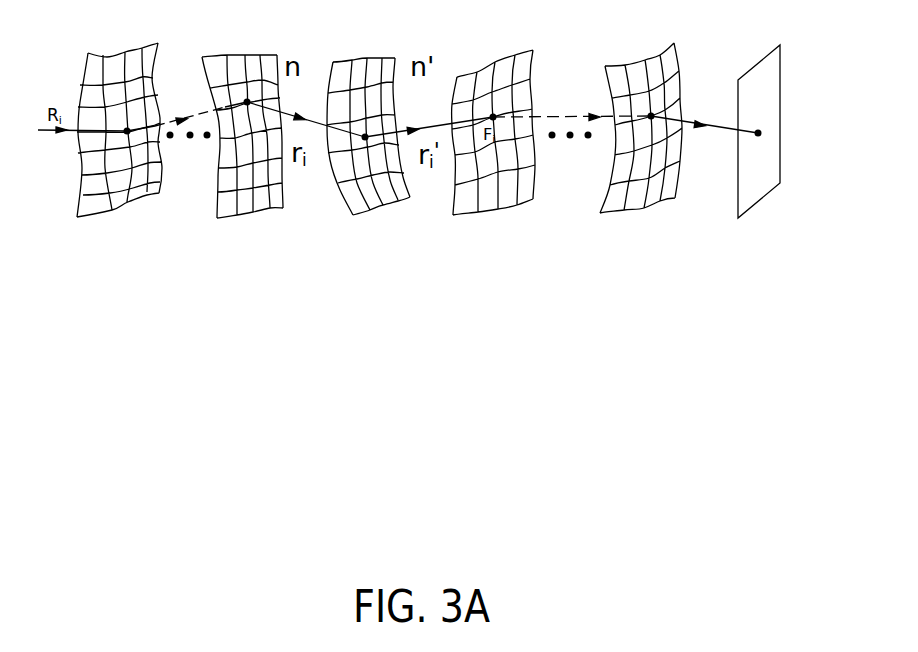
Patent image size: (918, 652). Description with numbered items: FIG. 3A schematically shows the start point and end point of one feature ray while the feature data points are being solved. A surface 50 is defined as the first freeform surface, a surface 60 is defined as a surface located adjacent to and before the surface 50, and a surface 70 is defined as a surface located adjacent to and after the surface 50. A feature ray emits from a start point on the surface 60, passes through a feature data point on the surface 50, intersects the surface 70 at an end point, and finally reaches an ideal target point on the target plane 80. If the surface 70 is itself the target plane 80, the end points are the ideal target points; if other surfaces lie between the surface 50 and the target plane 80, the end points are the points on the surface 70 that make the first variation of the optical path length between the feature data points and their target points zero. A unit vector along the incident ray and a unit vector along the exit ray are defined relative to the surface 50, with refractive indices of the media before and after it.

The surface 60 is at (133, 216).
The surface 50 is at (252, 230).
The surface 70 is at (377, 228).
The target plane 80 is at (762, 221).